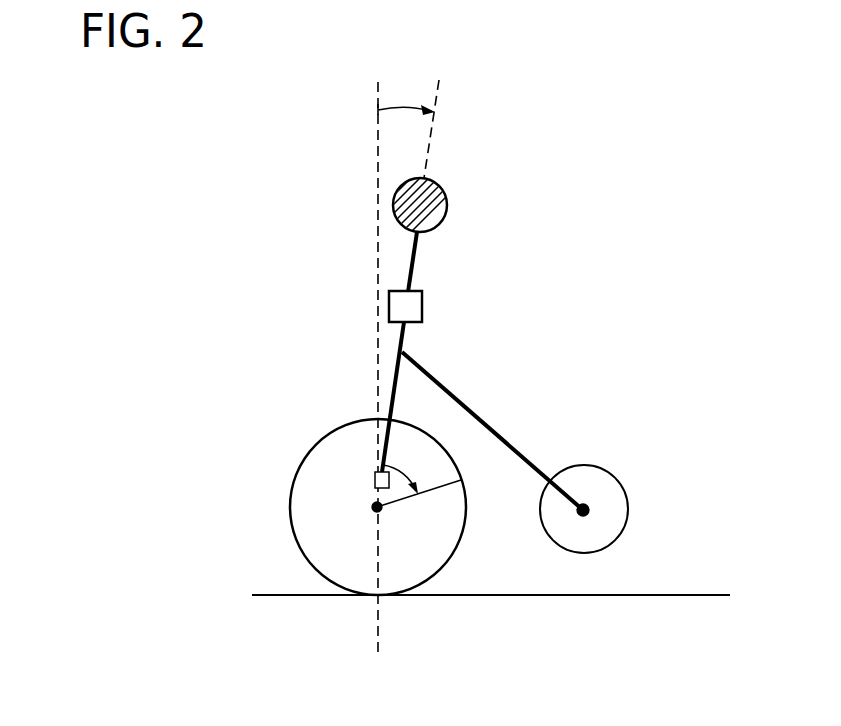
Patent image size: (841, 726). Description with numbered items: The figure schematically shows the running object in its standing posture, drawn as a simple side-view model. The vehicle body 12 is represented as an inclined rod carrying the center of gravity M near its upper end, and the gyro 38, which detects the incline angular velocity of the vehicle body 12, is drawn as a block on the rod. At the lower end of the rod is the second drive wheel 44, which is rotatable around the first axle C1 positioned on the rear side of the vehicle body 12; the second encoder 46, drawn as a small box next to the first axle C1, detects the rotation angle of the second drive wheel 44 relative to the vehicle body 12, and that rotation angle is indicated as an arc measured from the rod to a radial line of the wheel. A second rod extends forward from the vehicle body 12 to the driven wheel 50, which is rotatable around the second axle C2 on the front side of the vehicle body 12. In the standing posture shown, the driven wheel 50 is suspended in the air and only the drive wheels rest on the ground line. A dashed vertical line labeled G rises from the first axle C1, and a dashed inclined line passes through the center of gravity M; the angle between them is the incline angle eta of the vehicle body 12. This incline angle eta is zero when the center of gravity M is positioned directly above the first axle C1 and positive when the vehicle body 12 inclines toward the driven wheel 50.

The vehicle body 12 is at (418, 247).
The gyro 38 is at (422, 308).
The second drive wheel 44 is at (323, 438).
The second encoder 46 is at (375, 480).
The driven wheel 50 is at (615, 497).
The center of gravity M is at (447, 203).
The vertical reference line G is at (377, 351).
The first axle C1 is at (416, 498).
The second axle C2 is at (582, 524).
The incline angle eta is at (416, 129).